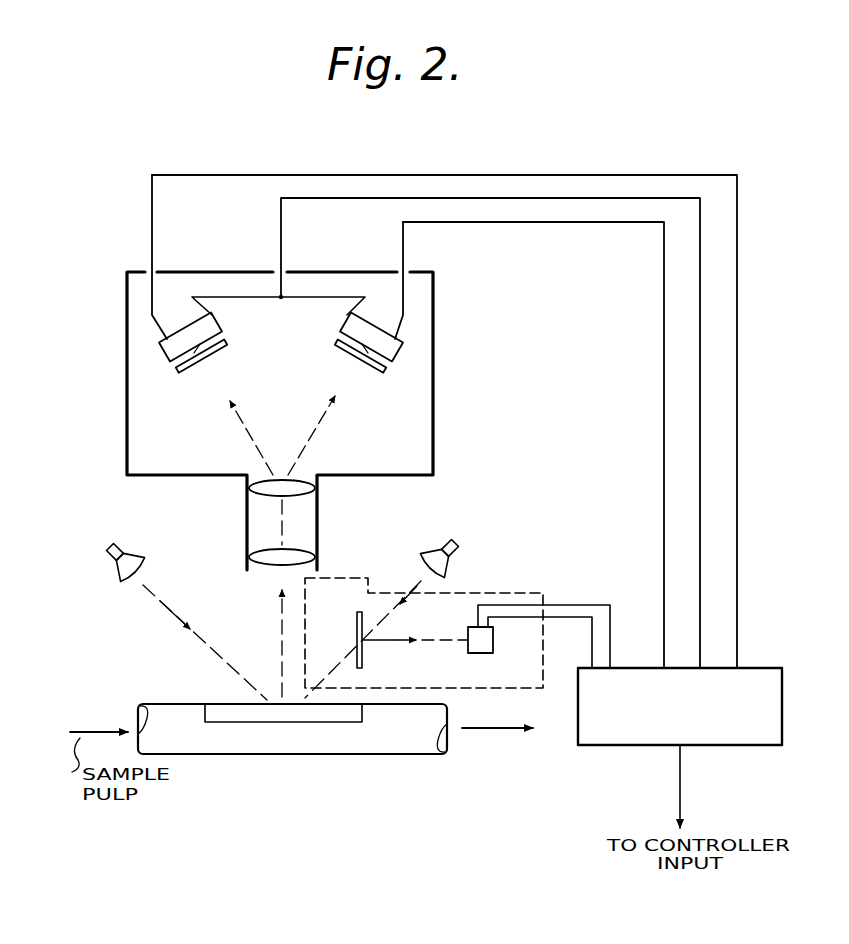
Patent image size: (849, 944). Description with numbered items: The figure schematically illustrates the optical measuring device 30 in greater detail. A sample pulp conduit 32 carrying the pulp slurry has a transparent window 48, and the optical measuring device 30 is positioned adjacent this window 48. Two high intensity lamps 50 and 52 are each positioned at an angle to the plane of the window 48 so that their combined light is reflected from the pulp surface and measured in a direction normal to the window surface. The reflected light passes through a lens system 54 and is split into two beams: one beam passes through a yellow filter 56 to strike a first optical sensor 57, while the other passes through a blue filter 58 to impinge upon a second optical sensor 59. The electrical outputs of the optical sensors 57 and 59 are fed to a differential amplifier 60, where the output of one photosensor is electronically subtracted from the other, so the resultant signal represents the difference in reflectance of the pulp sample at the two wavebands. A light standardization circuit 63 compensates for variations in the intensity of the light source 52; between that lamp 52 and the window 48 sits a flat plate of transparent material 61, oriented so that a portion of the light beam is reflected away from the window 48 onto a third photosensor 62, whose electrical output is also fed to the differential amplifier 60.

The optical measuring device 30 is at (449, 332).
The sample pulp conduit 32 is at (413, 753).
The transparent window 48 is at (313, 720).
The high intensity lamp 50 is at (130, 553).
The high intensity lamp 52 is at (446, 545).
The lens system 54 is at (305, 509).
The yellow filter 56 is at (363, 373).
The first optical sensor 57 is at (345, 318).
The blue filter 58 is at (188, 375).
The second optical sensor 59 is at (221, 319).
The differential amplifier 60 is at (782, 698).
The transparent material 61 is at (357, 620).
The third photosensor 62 is at (480, 656).
The light standardization circuit 63 is at (503, 592).